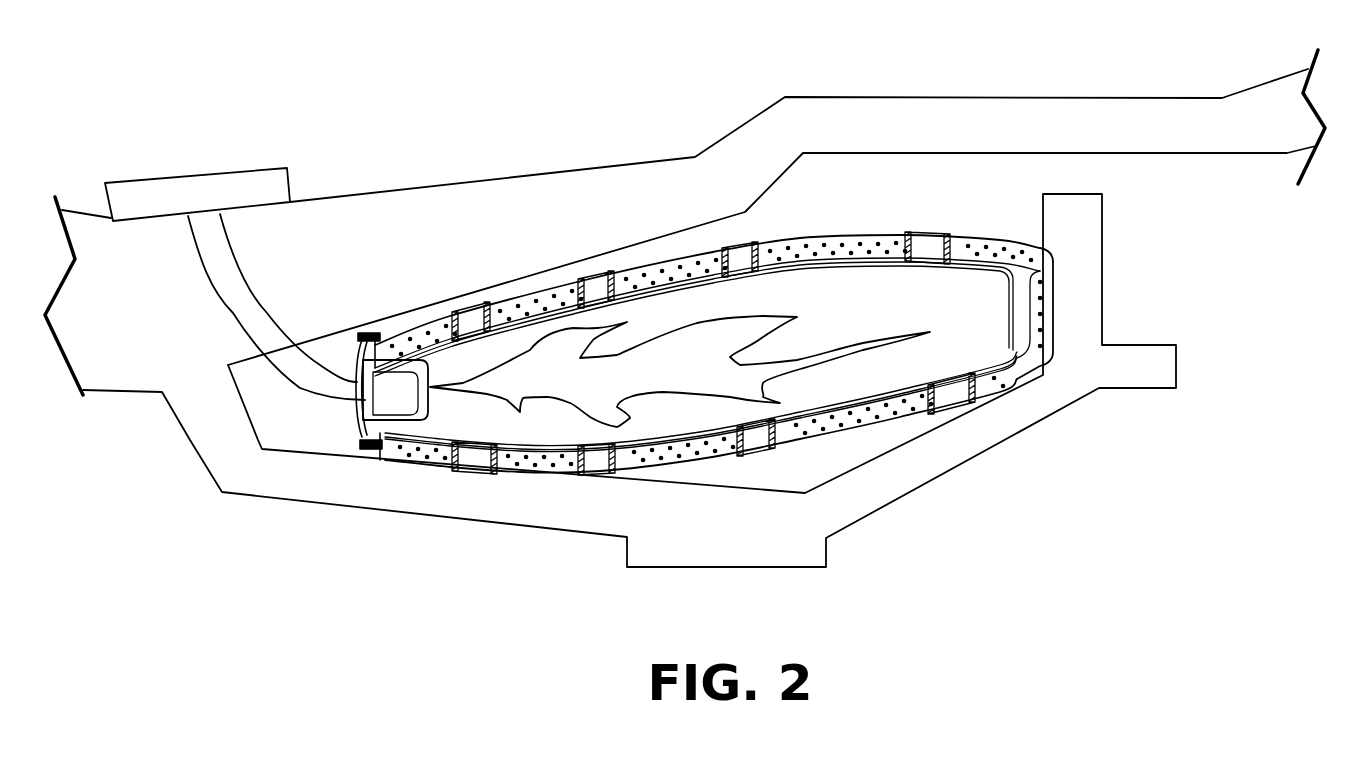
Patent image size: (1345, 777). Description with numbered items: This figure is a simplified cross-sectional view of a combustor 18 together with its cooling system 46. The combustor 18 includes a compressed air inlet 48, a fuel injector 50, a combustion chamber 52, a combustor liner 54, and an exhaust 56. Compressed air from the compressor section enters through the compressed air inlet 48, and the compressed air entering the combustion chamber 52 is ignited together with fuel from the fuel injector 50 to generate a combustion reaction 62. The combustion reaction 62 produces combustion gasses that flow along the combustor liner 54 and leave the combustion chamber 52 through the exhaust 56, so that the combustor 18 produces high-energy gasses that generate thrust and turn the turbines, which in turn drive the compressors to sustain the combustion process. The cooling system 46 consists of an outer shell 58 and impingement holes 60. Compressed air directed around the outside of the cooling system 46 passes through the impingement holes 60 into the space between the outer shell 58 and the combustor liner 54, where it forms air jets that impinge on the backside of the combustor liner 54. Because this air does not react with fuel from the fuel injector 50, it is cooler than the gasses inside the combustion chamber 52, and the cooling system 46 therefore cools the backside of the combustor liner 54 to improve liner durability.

The combustor 18 is at (905, 186).
The cooling system 46 is at (806, 241).
The compressed air inlet 48 is at (358, 366).
The fuel injector 50 is at (397, 418).
The combustion chamber 52 is at (848, 372).
The combustor liner 54 is at (869, 268).
The exhaust 56 is at (1050, 306).
The outer shell 58 is at (512, 305).
The impingement holes 60 is at (640, 262).
The combustion reaction 62 is at (704, 378).